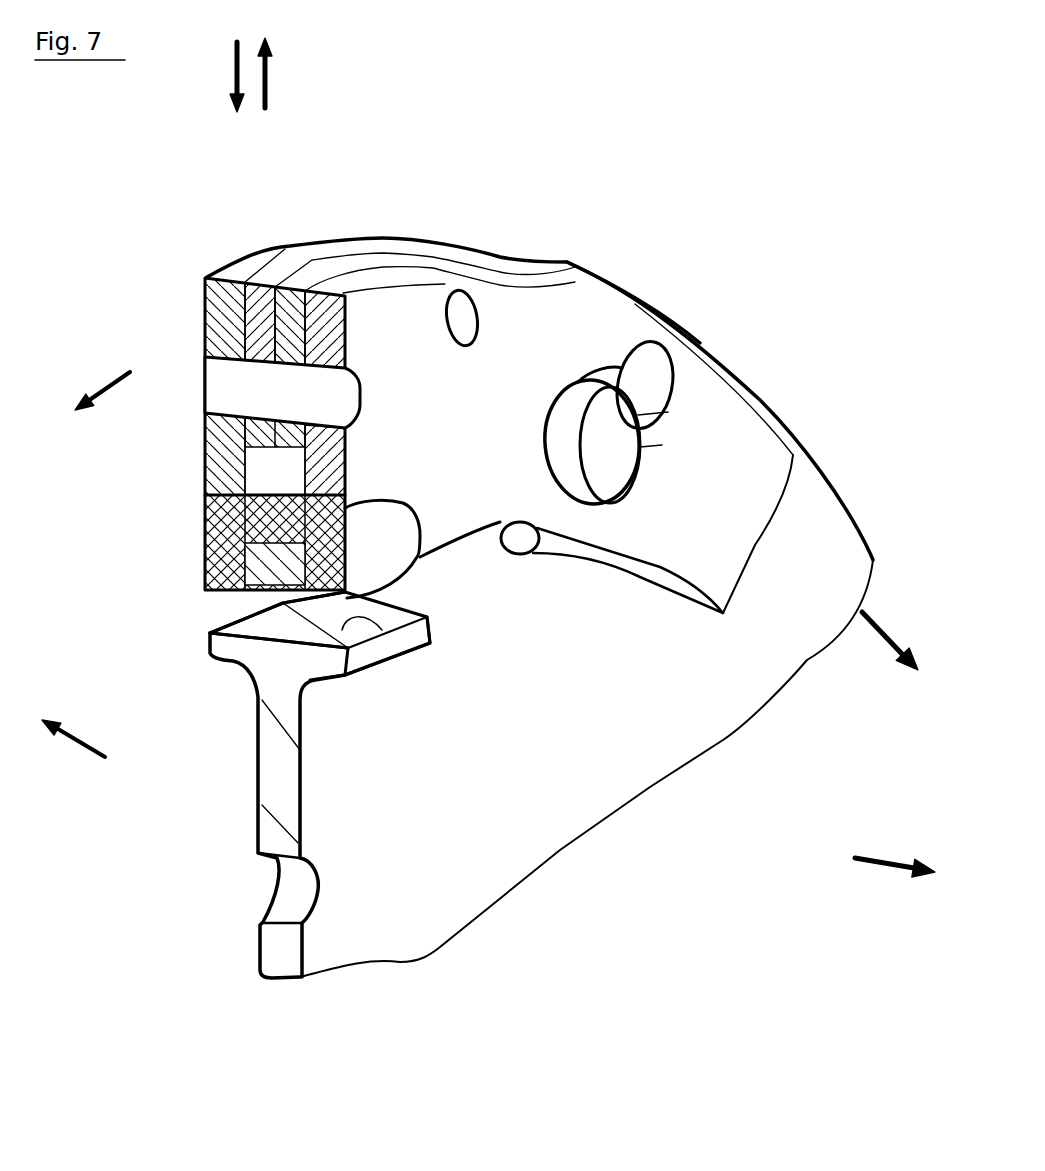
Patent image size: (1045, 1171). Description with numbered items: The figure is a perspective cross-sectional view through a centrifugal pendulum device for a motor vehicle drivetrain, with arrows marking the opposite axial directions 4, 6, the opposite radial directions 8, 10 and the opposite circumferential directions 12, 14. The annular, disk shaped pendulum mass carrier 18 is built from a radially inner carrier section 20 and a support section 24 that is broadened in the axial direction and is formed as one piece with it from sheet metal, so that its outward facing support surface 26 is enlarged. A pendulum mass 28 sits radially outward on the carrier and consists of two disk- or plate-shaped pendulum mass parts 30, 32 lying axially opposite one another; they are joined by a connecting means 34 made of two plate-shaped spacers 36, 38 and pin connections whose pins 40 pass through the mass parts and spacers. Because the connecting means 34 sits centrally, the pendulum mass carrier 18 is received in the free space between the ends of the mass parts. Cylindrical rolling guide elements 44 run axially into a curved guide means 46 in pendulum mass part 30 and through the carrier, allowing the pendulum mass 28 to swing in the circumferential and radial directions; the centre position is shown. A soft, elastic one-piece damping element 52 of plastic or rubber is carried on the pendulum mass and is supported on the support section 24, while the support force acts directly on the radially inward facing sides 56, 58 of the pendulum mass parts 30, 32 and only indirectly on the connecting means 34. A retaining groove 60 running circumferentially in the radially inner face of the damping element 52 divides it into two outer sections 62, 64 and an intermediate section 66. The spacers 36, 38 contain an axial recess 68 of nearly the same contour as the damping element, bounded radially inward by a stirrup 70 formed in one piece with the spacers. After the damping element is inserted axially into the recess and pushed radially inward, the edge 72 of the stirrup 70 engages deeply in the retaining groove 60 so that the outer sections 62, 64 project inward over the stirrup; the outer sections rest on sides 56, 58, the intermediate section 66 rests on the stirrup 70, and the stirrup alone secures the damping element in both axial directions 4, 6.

The axial direction 4 is at (880, 860).
The axial direction 6 is at (100, 752).
The radial direction 8 is at (275, 95).
The radial direction 10 is at (228, 60).
The circumferential direction 12 is at (120, 378).
The circumferential direction 14 is at (875, 628).
The pendulum mass carrier 18 is at (850, 502).
The carrier section 20 is at (283, 790).
The support section 24 is at (334, 655).
The support surface 26 is at (350, 592).
The pendulum mass 28 is at (600, 262).
The pendulum mass part 30 is at (388, 262).
The pendulum mass part 32 is at (291, 256).
The connecting means 34 is at (283, 266).
The spacer 36 is at (340, 252).
The spacer 38 is at (311, 253).
The pin 40 is at (232, 380).
The guide element 44 is at (617, 440).
The guide means 46 is at (677, 380).
The damping element 52 is at (193, 550).
The side 56 is at (350, 528).
The side 58 is at (207, 507).
The retaining groove 60 is at (281, 613).
The outer section 62 is at (422, 618).
The outer section 64 is at (205, 563).
The intermediate section 66 is at (207, 518).
The axial recess 68 is at (243, 466).
The stirrup 70 is at (257, 583).
The edge 72 is at (345, 545).